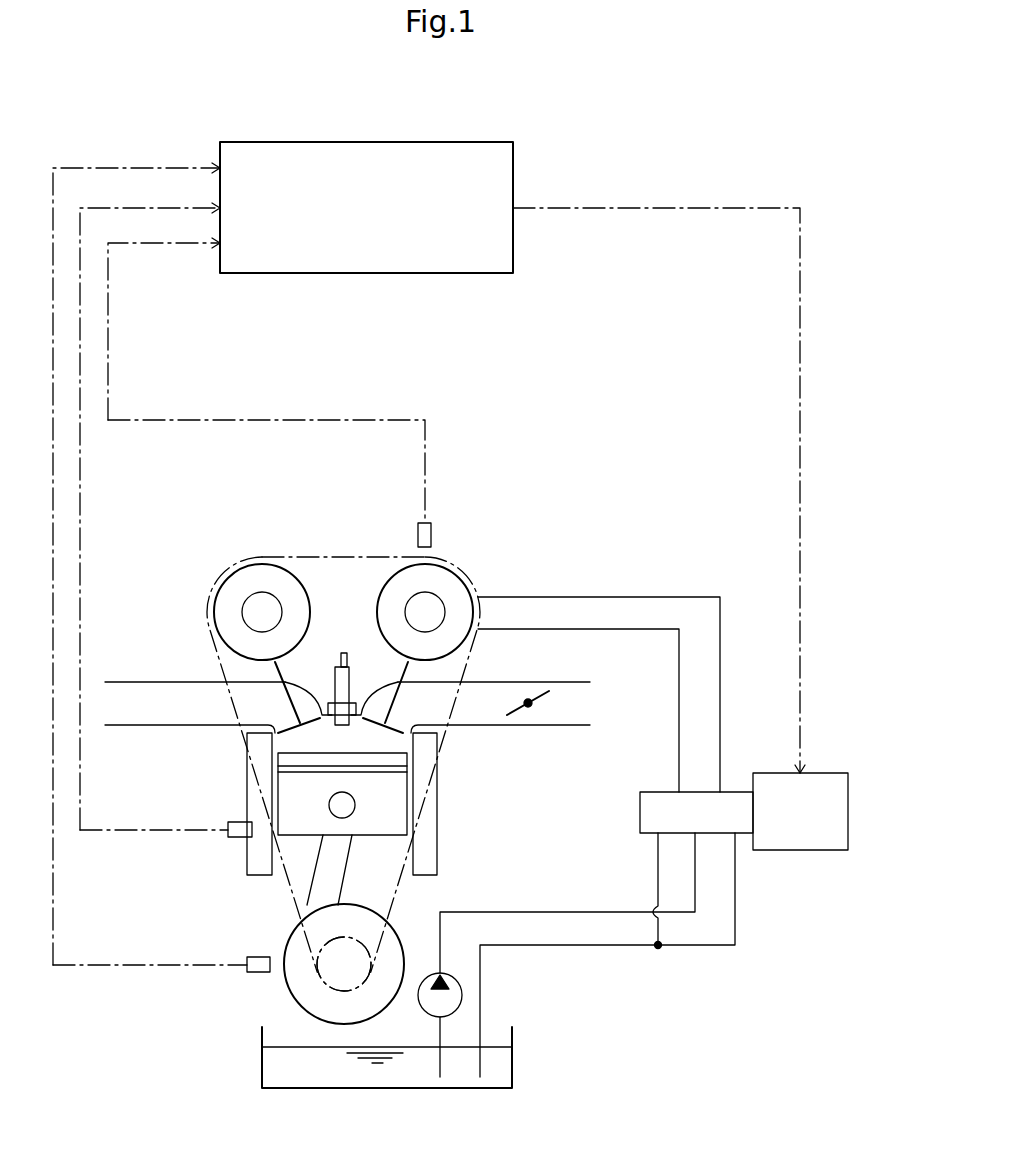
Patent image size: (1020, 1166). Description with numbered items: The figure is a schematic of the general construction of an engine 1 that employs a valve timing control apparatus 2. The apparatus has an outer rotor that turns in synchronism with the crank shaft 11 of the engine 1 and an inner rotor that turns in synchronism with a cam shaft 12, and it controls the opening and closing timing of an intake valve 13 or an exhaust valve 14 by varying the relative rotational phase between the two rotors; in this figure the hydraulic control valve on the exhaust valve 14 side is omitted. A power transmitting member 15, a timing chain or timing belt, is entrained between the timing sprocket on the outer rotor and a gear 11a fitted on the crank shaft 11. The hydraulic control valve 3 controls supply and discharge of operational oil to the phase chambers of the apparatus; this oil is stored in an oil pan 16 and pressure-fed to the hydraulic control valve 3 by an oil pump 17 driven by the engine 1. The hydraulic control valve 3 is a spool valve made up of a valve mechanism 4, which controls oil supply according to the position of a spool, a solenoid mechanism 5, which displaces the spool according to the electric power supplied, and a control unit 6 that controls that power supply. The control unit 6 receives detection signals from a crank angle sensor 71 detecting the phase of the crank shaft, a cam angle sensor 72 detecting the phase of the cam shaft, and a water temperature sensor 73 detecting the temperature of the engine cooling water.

The engine 1 is at (217, 546).
The valve timing control apparatus 2 is at (463, 577).
The hydraulic control valve 3 is at (741, 846).
The valve mechanism 4 is at (650, 792).
The solenoid mechanism 5 is at (836, 780).
The control unit 6 is at (368, 142).
The crank shaft 11 is at (393, 935).
The gear 11a is at (338, 993).
The cam shaft 12 is at (418, 612).
The intake valve 13 is at (388, 735).
The exhaust valve 14 is at (298, 735).
The power transmitting member 15 is at (270, 884).
The oil pan 16 is at (513, 1068).
The oil pump 17 is at (462, 994).
The crank angle sensor 71 is at (258, 973).
The cam angle sensor 72 is at (432, 532).
The water temperature sensor 73 is at (238, 838).